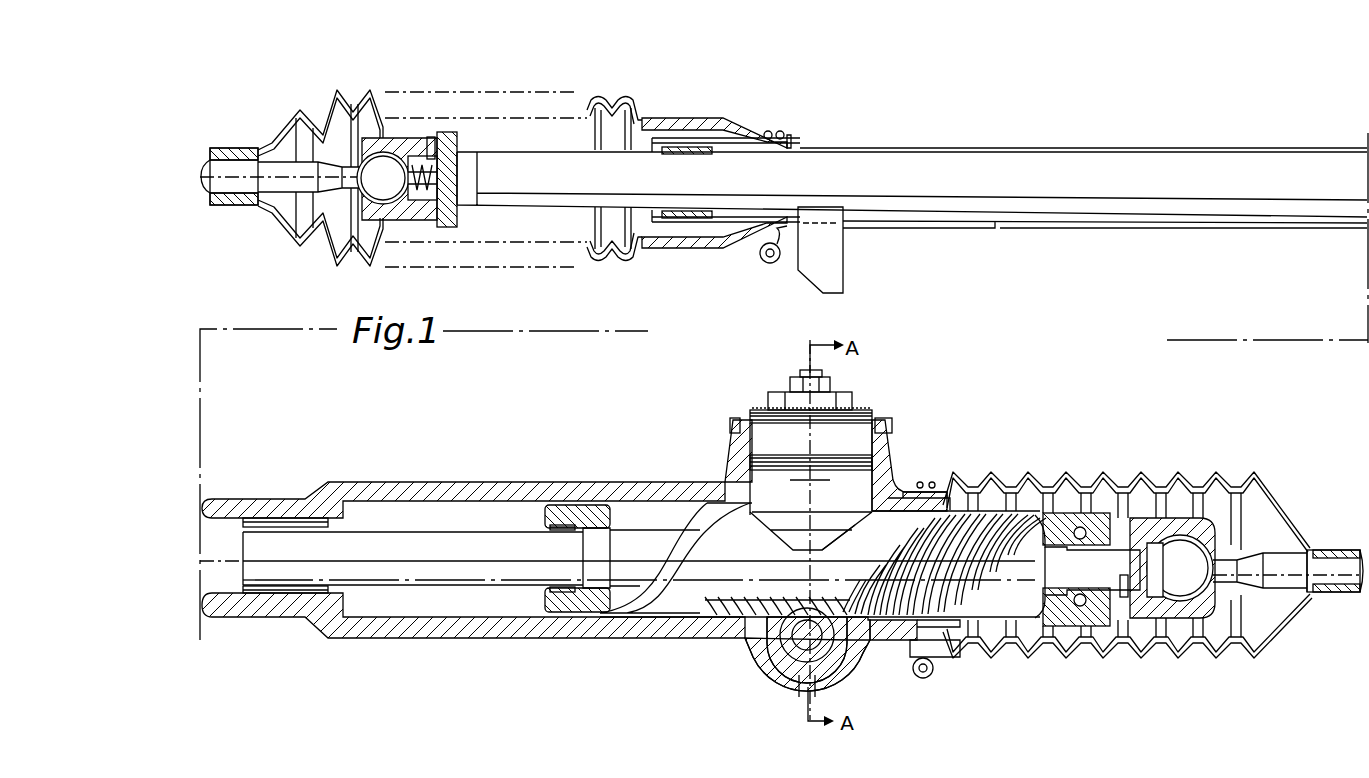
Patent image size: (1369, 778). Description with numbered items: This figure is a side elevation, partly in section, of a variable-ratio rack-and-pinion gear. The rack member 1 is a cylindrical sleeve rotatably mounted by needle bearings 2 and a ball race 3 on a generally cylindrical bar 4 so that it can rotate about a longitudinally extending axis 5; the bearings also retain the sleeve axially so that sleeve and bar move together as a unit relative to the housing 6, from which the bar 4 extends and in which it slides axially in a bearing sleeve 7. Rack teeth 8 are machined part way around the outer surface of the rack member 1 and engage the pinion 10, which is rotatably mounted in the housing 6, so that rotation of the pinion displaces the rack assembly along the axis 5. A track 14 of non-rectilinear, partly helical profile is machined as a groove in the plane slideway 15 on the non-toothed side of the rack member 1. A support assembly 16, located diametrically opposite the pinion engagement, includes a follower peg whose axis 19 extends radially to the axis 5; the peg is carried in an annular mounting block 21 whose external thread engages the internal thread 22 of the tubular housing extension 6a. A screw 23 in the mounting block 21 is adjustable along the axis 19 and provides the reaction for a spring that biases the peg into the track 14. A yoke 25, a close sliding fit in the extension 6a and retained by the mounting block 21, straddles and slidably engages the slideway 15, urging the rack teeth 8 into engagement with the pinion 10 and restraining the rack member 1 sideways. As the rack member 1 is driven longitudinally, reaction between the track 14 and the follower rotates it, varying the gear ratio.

The rack member 1 is at (578, 520).
The needle bearings 2 is at (562, 587).
The ball race 3 is at (1080, 507).
The bar 4 is at (566, 167).
The longitudinally extending axis 5 is at (748, 560).
The housing 6 is at (760, 655).
The tubular extension of the housing 6a is at (888, 455).
The bearing sleeve 7 is at (700, 221).
The rack teeth 8 is at (883, 567).
The pinion 10 is at (791, 686).
The track 14 is at (677, 563).
The slideway 15 is at (708, 540).
The support assembly 16 is at (768, 398).
The peg axis 19 is at (803, 522).
The mounting block 21 is at (772, 430).
The internal thread 22 is at (752, 438).
The screw 23 is at (803, 370).
The yoke 25 is at (833, 518).